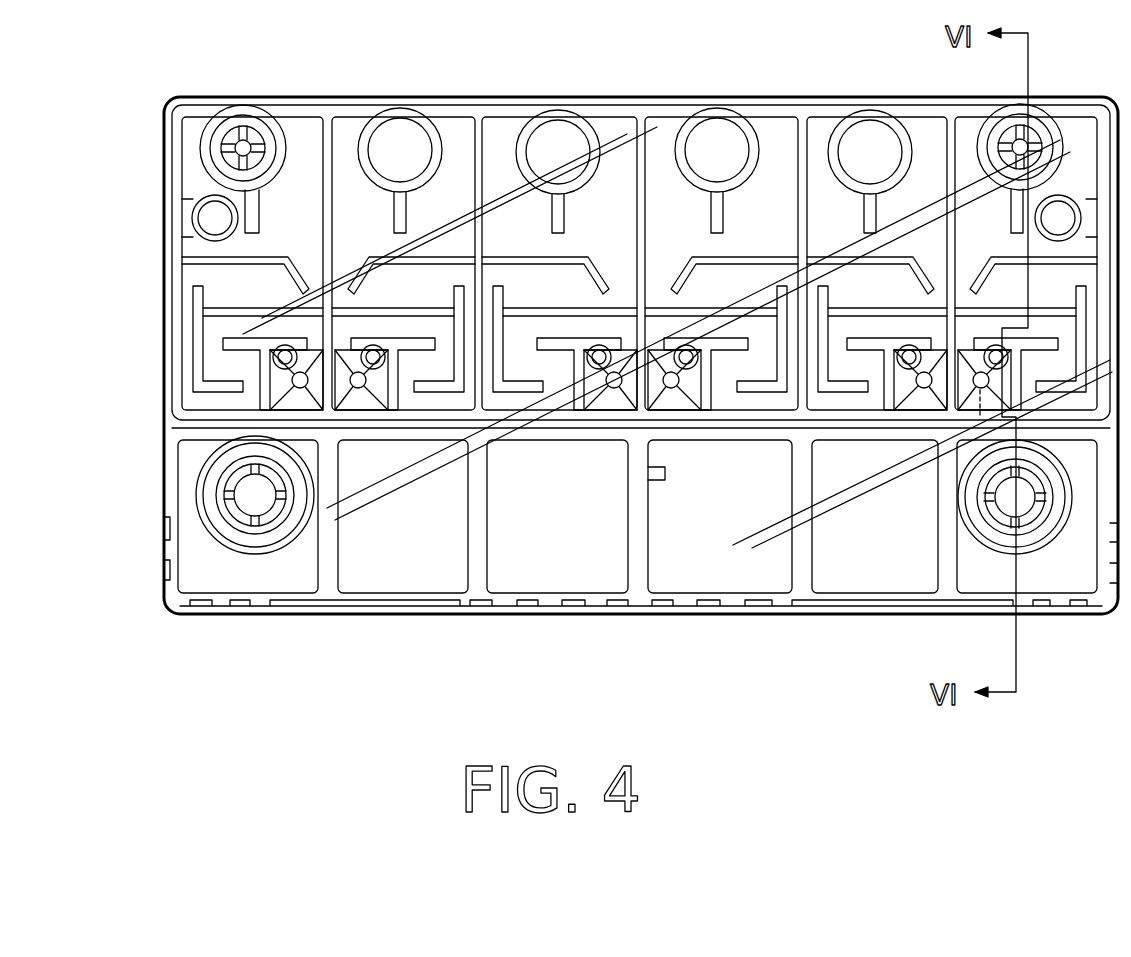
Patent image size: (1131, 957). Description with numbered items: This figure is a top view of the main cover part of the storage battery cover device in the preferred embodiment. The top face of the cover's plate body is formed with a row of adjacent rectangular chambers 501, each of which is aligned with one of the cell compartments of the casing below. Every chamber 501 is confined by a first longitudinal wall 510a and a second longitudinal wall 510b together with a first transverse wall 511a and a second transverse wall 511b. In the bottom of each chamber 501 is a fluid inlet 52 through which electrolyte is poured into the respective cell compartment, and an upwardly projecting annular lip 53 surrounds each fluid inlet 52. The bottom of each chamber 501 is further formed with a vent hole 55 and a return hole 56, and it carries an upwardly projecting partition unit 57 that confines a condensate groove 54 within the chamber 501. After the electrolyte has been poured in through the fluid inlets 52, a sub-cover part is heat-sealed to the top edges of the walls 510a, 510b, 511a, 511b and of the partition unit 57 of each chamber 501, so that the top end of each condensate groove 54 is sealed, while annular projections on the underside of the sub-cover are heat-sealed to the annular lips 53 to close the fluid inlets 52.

The rectangular chamber 501 is at (602, 122).
The first longitudinal wall 510a is at (226, 112).
The second longitudinal wall 510b is at (195, 420).
The first transverse wall 511a is at (170, 145).
The second transverse wall 511b is at (347, 143).
The fluid inlet 52 is at (555, 140).
The annular lip 53 is at (533, 132).
The condensate groove 54 is at (213, 280).
The vent hole 55 is at (650, 335).
The return hole 56 is at (677, 388).
The partition unit 57 is at (197, 315).